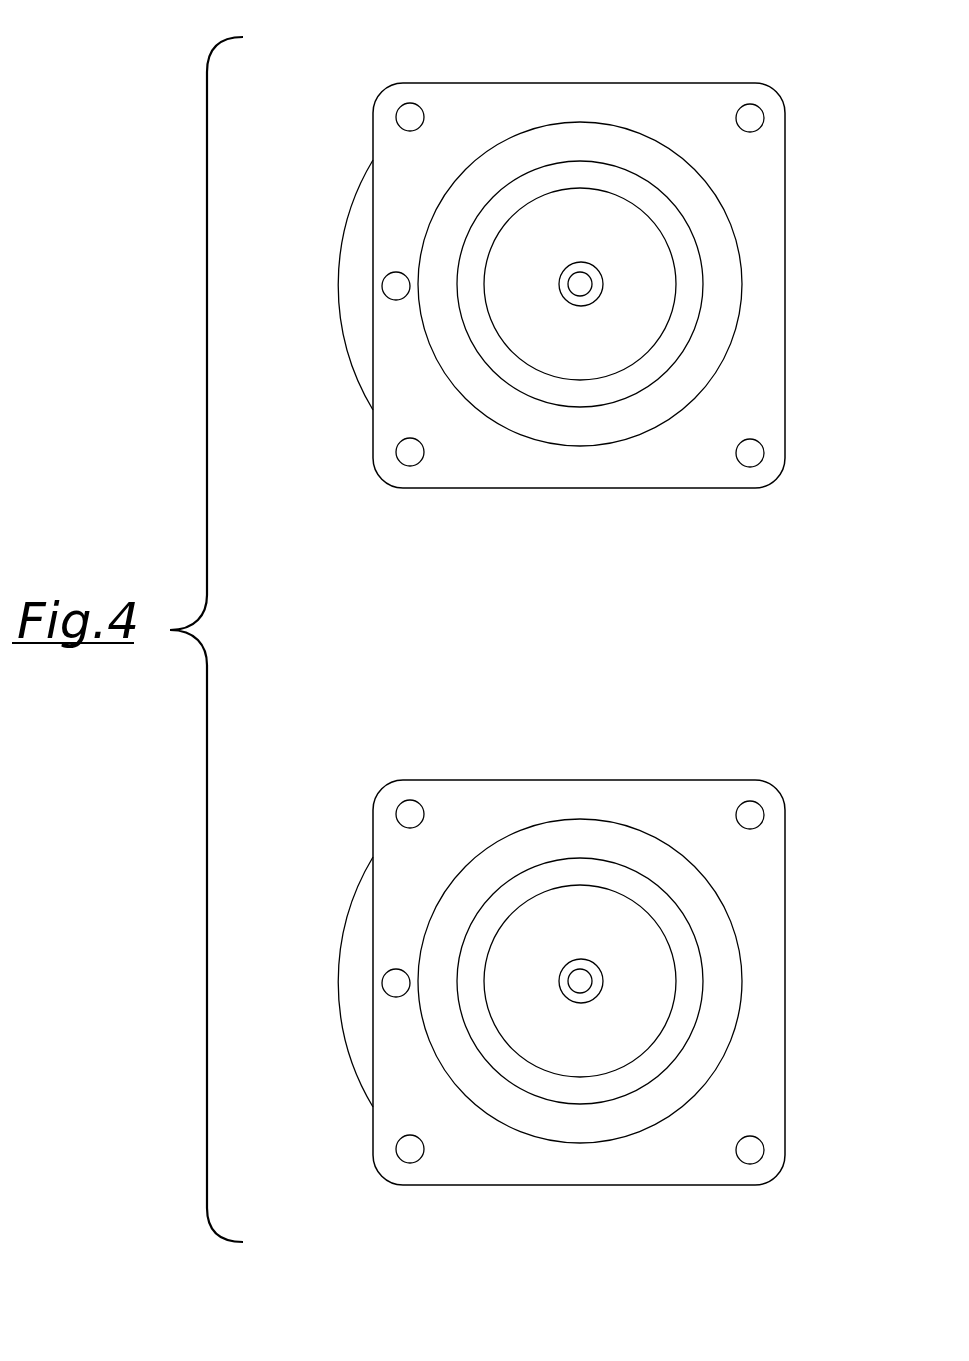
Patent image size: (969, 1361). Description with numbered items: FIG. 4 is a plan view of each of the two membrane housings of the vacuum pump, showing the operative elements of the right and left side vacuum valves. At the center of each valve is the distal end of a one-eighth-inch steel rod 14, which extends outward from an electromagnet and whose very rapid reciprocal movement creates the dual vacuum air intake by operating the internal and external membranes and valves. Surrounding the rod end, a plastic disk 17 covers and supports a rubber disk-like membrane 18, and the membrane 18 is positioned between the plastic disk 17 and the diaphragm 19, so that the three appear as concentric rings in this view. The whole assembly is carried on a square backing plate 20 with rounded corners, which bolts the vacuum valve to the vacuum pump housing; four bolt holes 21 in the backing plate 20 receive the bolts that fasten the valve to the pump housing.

The steel rod 14 is at (587, 293).
The plastic disk 17 is at (637, 233).
The rubber membrane 18 is at (593, 175).
The diaphragm 19 is at (497, 163).
The backing plate 20 is at (658, 470).
The bolt hole 21 is at (762, 118).